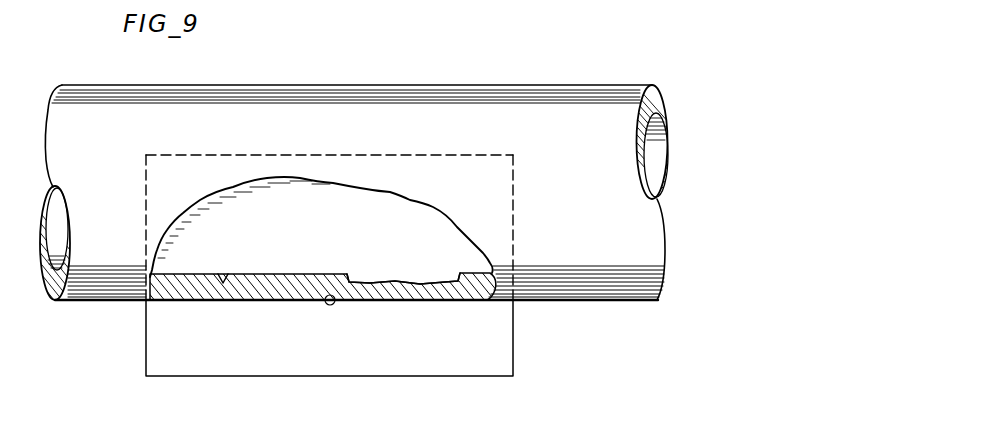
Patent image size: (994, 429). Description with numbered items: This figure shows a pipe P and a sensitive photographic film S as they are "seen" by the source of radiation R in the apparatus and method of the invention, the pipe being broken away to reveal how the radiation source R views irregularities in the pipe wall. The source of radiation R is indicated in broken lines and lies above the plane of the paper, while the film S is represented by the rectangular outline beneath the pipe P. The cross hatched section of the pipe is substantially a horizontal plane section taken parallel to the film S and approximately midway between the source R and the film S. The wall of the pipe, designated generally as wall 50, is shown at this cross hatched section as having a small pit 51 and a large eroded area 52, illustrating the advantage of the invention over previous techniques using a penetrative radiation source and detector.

The pipe P is at (582, 86).
The wall of the pipe 50 is at (302, 273).
The small pit 51 is at (223, 278).
The large eroded area 52 is at (370, 281).
The source of radiation R is at (334, 306).
The sensitive photographic film S is at (503, 376).